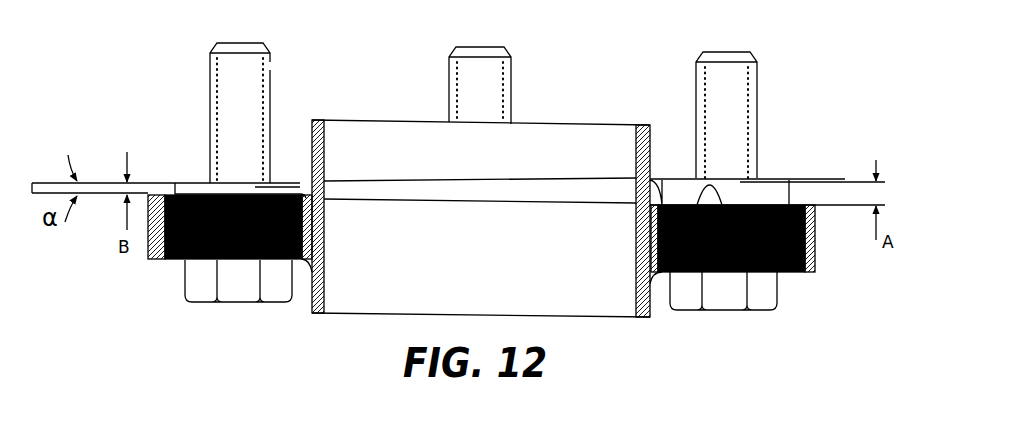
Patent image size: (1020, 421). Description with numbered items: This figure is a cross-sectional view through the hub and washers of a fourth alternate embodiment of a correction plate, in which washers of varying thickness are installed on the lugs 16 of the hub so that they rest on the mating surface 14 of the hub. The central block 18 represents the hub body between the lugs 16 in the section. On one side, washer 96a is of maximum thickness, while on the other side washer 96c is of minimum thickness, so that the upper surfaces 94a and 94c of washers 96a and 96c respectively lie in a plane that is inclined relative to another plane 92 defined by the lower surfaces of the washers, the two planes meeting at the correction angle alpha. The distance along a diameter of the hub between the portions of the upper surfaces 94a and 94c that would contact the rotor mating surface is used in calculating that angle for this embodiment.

The mating surface 14 is at (690, 250).
The lug 16 is at (270, 62).
The housing block 18 is at (550, 120).
The plane 92 is at (790, 205).
The upper surface 94a is at (687, 177).
The upper surface 94c is at (195, 182).
The washer 96a is at (765, 192).
The washer 96c is at (280, 187).